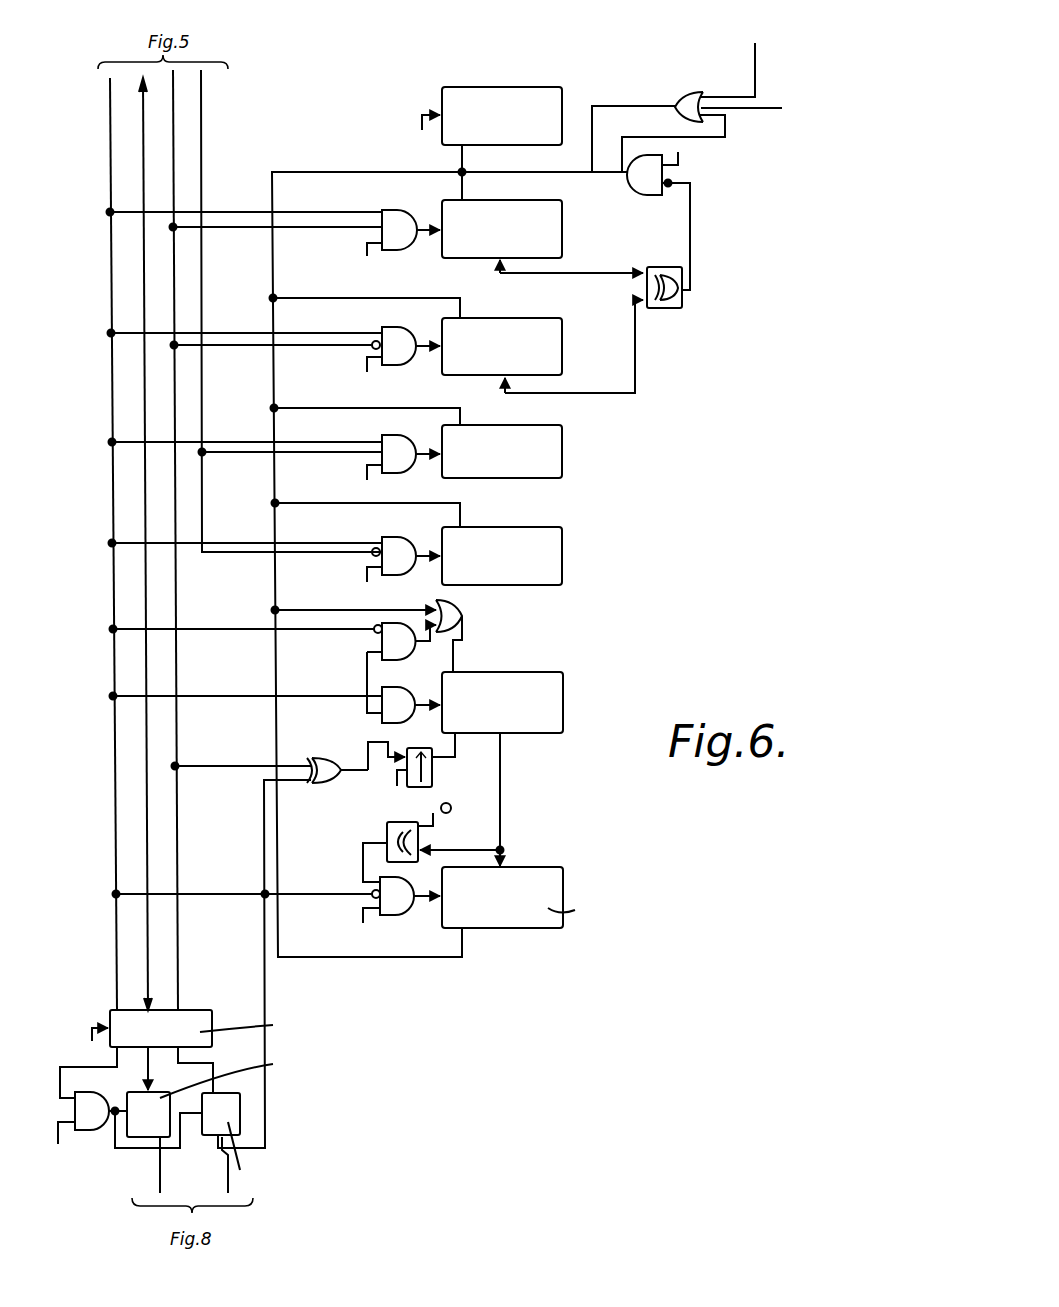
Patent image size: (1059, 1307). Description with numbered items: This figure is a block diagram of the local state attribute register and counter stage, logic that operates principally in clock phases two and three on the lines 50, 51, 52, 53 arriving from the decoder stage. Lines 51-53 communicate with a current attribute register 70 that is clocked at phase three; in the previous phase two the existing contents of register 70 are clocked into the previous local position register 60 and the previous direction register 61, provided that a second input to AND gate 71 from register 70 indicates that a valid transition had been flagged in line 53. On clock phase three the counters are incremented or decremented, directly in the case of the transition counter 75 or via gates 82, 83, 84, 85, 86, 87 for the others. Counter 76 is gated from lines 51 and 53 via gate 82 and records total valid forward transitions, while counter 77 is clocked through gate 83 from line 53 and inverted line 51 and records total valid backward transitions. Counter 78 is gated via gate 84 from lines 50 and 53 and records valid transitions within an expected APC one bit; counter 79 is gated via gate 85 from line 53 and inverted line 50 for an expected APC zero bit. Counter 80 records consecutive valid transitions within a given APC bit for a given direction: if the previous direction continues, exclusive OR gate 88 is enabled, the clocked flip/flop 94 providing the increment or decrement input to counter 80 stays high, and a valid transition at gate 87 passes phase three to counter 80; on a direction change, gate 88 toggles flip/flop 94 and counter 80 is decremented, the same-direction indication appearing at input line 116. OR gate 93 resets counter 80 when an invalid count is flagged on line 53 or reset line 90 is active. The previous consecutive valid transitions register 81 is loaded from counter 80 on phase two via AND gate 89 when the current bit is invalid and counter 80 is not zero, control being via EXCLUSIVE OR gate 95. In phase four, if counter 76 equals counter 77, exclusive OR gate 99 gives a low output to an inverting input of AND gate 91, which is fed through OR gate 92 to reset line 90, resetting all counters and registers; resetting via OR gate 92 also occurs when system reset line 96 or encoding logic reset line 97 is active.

The line 50 is at (201, 155).
The line 51 is at (173, 118).
The line 52 is at (143, 152).
The line 53 is at (110, 122).
The previous local position register 60 is at (140, 1140).
The previous direction register 61 is at (225, 1117).
The current attribute register 70 is at (205, 1015).
The AND gate 71 is at (85, 1094).
The transition counter 75 is at (515, 88).
The counter 76 is at (562, 236).
The counter 77 is at (562, 358).
The counter 78 is at (562, 455).
The counter 79 is at (562, 555).
The counter 80 is at (563, 694).
The previous consecutive valid transitions register 81 is at (556, 871).
The gate 82 is at (397, 212).
The gate 83 is at (410, 362).
The gate 84 is at (410, 471).
The gate 85 is at (410, 572).
The gate 86 is at (414, 655).
The gate 87 is at (412, 715).
The exclusive OR gate 88 is at (330, 785).
The AND gate 89 is at (399, 915).
The reset line 90 is at (313, 172).
The AND gate 91 is at (652, 196).
The OR gate 92 is at (692, 92).
The OR gate 93 is at (456, 603).
The clocked flip/flop 94 is at (432, 783).
The EXCLUSIVE OR gate 95 is at (394, 823).
The system reset line 96 is at (755, 78).
The encoding logic reset line 97 is at (770, 110).
The exclusive OR gate 99 is at (672, 309).
The input line 116 is at (372, 742).